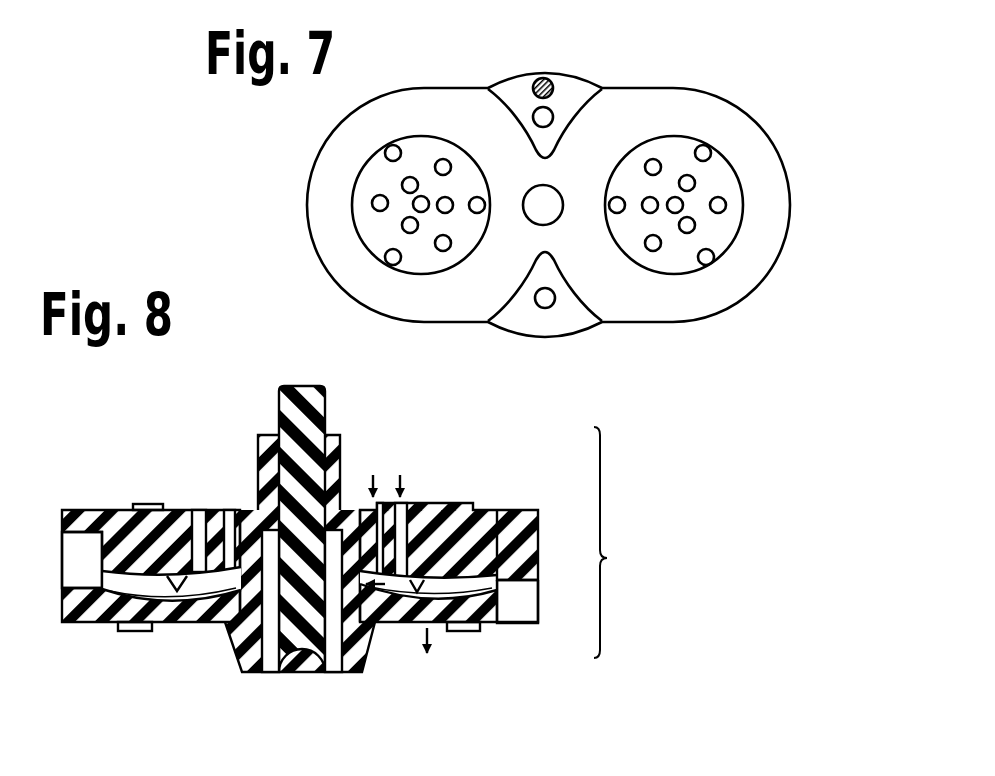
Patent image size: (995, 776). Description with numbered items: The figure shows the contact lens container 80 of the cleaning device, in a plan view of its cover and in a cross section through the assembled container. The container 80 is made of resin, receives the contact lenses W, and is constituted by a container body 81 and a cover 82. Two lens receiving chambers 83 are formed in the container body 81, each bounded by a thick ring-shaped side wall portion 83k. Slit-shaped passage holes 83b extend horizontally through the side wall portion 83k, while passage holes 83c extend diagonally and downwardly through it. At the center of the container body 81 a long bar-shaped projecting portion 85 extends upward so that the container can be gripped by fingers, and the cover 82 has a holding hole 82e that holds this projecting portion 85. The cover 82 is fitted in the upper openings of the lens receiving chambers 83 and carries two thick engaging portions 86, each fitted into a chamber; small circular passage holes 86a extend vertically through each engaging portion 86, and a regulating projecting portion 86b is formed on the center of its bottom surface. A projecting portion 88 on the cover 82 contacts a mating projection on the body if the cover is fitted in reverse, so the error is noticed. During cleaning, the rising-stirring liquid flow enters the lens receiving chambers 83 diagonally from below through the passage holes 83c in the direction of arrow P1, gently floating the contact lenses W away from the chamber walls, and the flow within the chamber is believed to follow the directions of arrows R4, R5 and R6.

In FIG. 7, the container 80 is at (558, 318).
In FIG. 8, the container 80 is at (624, 542).
In FIG. 8, the container body 81 is at (222, 612).
In FIG. 7, the cover 82 is at (475, 310).
In FIG. 8, the cover 82 is at (353, 503).
In FIG. 7, the holding hole 82e is at (558, 214).
In FIG. 8, the holding hole 82e is at (281, 458).
In FIG. 8, the lens receiving chamber 83 is at (105, 584).
In FIG. 8, the passage hole 83b is at (67, 547).
In FIG. 8, the passage hole 83c is at (528, 612).
In FIG. 8, the side wall portion 83k is at (538, 572).
In FIG. 8, the projecting portion 85 is at (325, 393).
In FIG. 7, the engaging portion 86 is at (360, 243).
In FIG. 8, the engaging portion 86 is at (172, 575).
In FIG. 7, the passage hole 86a is at (392, 152).
In FIG. 8, the passage hole 86a is at (232, 508).
In FIG. 7, the regulating projecting portion 86b is at (418, 205).
In FIG. 8, the regulating projecting portion 86b is at (177, 593).
In FIG. 7, the projecting portion 88 is at (549, 78).
In FIG. 8, the contact lenses W is at (140, 632).
In FIG. 8, the arrow R4 is at (401, 475).
In FIG. 8, the arrow R5 is at (437, 607).
In FIG. 8, the arrow R6 is at (380, 586).
In FIG. 8, the arrow P1 is at (566, 690).